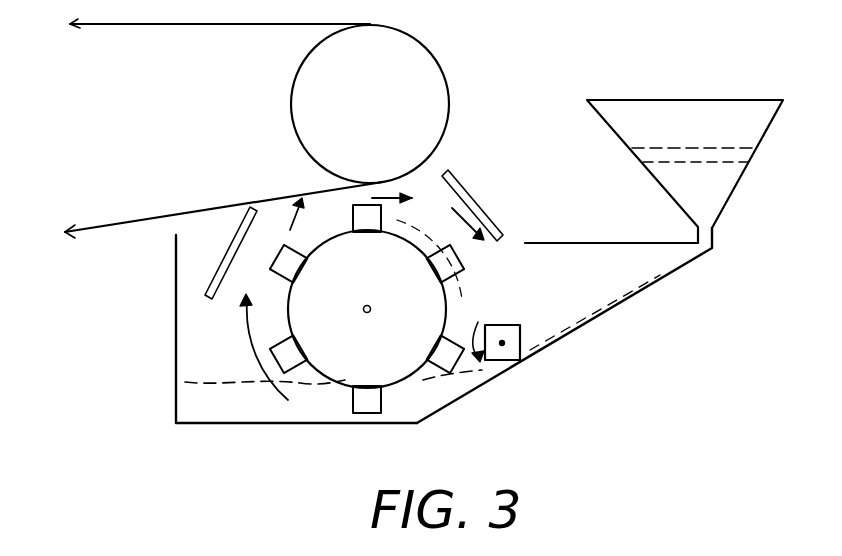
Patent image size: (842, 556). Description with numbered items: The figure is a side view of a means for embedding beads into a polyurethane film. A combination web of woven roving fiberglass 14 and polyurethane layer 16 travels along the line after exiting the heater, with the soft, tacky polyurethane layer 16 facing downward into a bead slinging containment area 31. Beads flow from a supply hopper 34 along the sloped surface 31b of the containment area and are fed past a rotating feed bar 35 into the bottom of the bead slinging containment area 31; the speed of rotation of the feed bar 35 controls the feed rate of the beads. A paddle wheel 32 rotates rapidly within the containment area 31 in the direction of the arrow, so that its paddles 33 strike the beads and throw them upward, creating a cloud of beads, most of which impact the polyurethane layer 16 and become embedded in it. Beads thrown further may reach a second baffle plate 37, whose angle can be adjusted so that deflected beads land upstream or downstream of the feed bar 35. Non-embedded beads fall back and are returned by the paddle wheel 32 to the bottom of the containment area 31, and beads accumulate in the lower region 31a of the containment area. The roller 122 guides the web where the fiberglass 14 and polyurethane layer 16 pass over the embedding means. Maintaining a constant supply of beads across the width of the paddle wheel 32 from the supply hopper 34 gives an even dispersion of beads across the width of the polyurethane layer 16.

The woven roving fiberglass 14 is at (115, 24).
The polyurethane layer 16 is at (88, 232).
The roller 122 is at (293, 212).
The bead slinging containment area 31 is at (210, 337).
The developer sump region 31a is at (208, 400).
The sloped surface 31b is at (603, 315).
The paddle wheel 32 is at (386, 283).
The paddles 33 is at (288, 353).
The supply hopper 34 is at (677, 135).
The feed bar 35 is at (521, 340).
The second baffle plate 37 is at (472, 200).